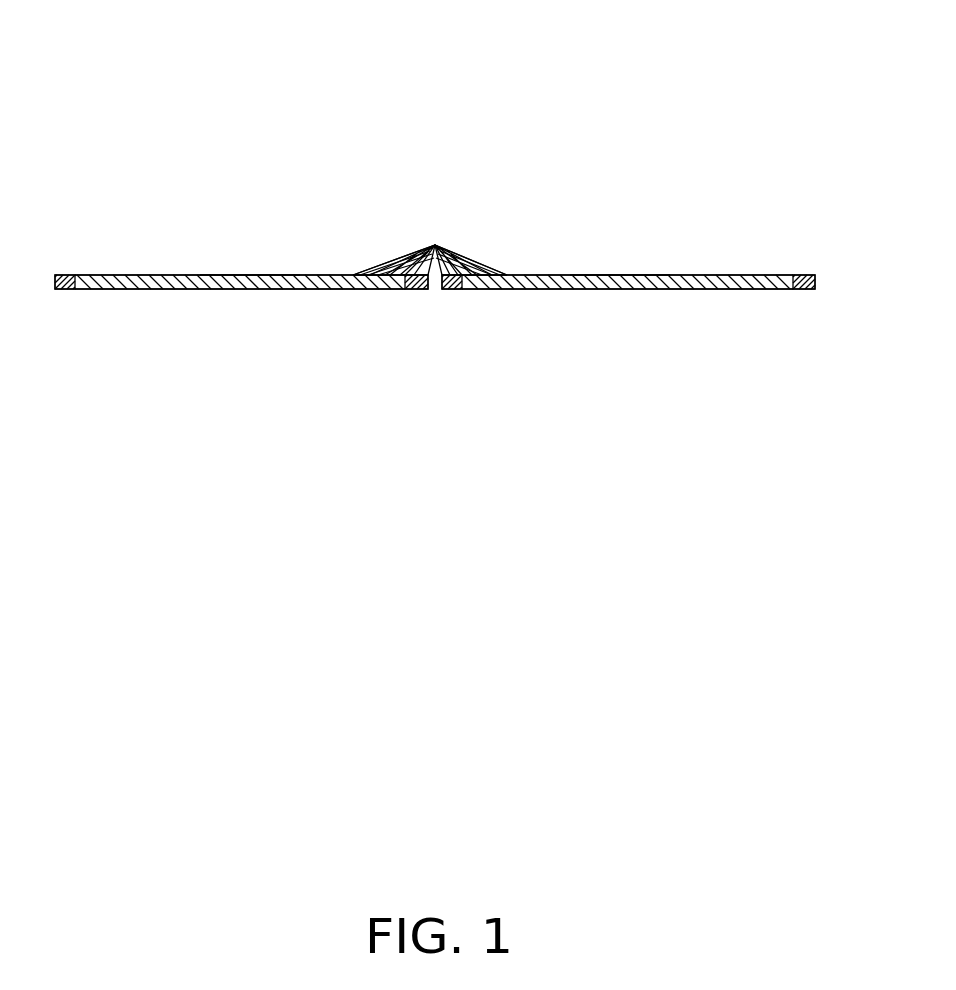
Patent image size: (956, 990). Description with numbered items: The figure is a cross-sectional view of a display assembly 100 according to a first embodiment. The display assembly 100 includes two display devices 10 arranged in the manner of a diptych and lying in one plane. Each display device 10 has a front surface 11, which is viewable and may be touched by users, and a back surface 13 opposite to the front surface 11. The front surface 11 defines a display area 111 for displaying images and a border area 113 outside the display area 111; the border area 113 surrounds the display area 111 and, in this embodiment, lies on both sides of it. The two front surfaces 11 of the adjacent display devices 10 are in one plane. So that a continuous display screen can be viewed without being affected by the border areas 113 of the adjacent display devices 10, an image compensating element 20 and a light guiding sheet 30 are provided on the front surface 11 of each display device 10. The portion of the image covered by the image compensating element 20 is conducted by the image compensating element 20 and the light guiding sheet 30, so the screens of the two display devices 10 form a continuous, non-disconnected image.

The display assembly 100 is at (340, 55).
The display device 10 is at (131, 289).
The front surface 11 is at (192, 274).
The display area 111 is at (241, 273).
The border area 113 is at (58, 274).
The back surface 13 is at (198, 290).
The image compensating element 20 is at (412, 253).
The light guiding sheet 30 is at (376, 266).